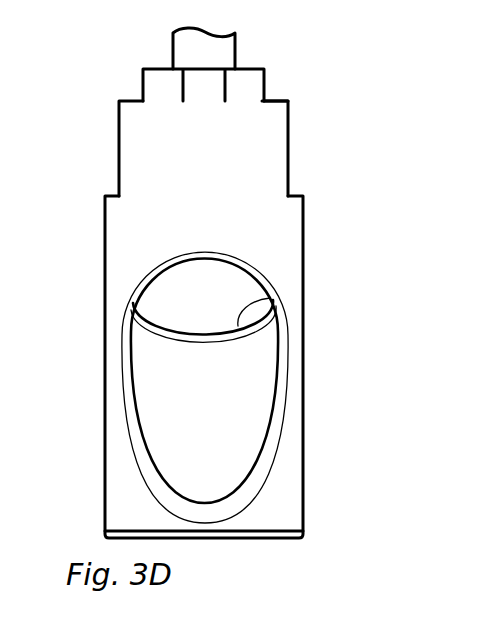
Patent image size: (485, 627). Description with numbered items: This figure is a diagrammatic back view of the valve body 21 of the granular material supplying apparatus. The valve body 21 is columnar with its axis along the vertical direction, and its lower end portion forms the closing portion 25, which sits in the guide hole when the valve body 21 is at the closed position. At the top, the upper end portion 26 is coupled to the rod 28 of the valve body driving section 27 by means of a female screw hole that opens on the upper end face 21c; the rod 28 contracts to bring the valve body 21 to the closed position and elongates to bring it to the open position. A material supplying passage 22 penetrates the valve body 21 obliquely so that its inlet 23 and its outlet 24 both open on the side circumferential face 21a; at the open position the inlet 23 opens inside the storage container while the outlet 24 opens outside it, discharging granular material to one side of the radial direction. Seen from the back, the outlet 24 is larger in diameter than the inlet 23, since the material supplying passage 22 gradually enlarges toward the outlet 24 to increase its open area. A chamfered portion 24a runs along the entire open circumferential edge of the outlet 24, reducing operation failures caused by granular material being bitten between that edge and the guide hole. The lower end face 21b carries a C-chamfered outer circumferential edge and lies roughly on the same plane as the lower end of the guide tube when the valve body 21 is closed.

The valve body 21 is at (97, 87).
The side circumferential face 21a is at (117, 240).
The lower end face 21b is at (273, 542).
The upper end face 21c is at (277, 99).
The material supplying passage 22 is at (145, 363).
The inlet 23 is at (240, 320).
The outlet 24 is at (262, 380).
The chamfered portion 24a is at (268, 433).
The closing portion 25 is at (292, 521).
The upper end portion 26 is at (131, 117).
The valve body driving section 27 is at (234, 62).
The rod 28 is at (225, 47).